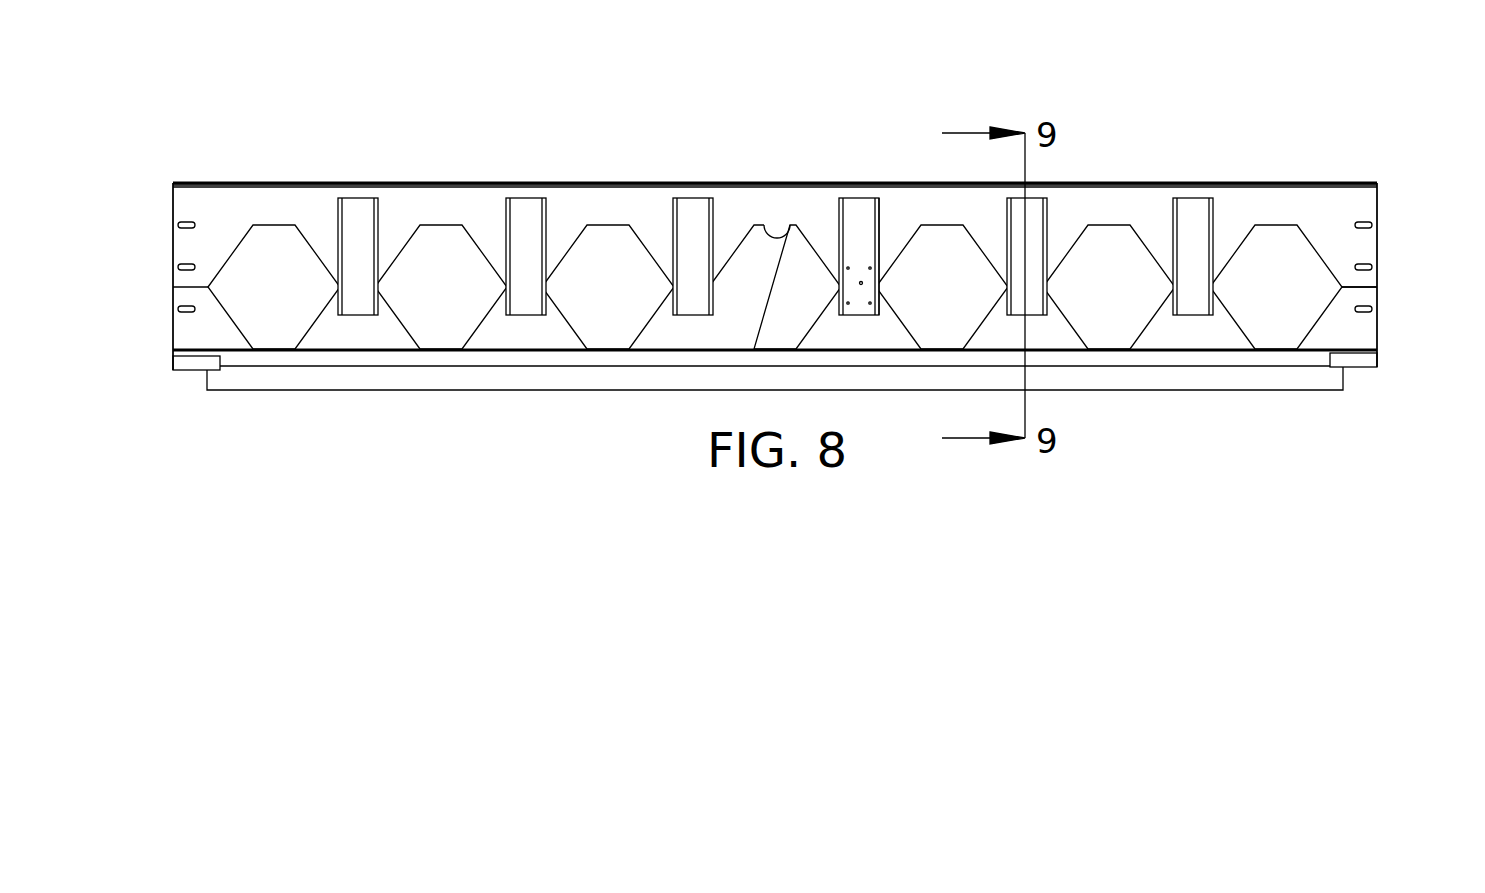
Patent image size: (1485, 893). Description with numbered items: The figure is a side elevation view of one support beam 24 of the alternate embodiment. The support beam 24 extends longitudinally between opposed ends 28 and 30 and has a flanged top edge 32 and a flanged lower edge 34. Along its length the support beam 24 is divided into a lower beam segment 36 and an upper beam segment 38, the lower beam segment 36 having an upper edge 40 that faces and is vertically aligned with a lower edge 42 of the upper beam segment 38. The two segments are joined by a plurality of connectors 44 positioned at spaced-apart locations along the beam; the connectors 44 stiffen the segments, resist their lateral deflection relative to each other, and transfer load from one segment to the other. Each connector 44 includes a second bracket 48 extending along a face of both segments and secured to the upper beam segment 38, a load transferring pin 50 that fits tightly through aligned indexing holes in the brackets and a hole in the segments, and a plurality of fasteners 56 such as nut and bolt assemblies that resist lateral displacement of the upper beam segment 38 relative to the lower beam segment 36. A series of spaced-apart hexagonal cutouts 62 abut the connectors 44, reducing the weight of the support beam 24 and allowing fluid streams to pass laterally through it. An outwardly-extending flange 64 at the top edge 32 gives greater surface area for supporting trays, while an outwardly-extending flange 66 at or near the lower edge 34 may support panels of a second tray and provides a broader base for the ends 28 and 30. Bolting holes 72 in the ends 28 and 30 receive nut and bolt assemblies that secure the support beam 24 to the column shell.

The support beam 24 is at (583, 182).
The opposed end 28 is at (183, 262).
The opposed end 30 is at (1374, 316).
The flanged top edge 32 is at (1378, 185).
The flanged lower edge 34 is at (1378, 343).
The lower beam segment 36 is at (665, 331).
The upper beam segment 38 is at (653, 213).
The upper edge 40 is at (1337, 278).
The lower edge 42 is at (1378, 286).
The connector 44 is at (878, 222).
The second bracket 48 is at (880, 258).
The load transferring pin 50 is at (866, 282).
The fasteners 56 is at (848, 302).
The cutouts 62 is at (787, 224).
The outwardly-extending flange 64 is at (1192, 182).
The outwardly-extending flange 66 is at (1323, 343).
The bolting holes 72 is at (185, 226).